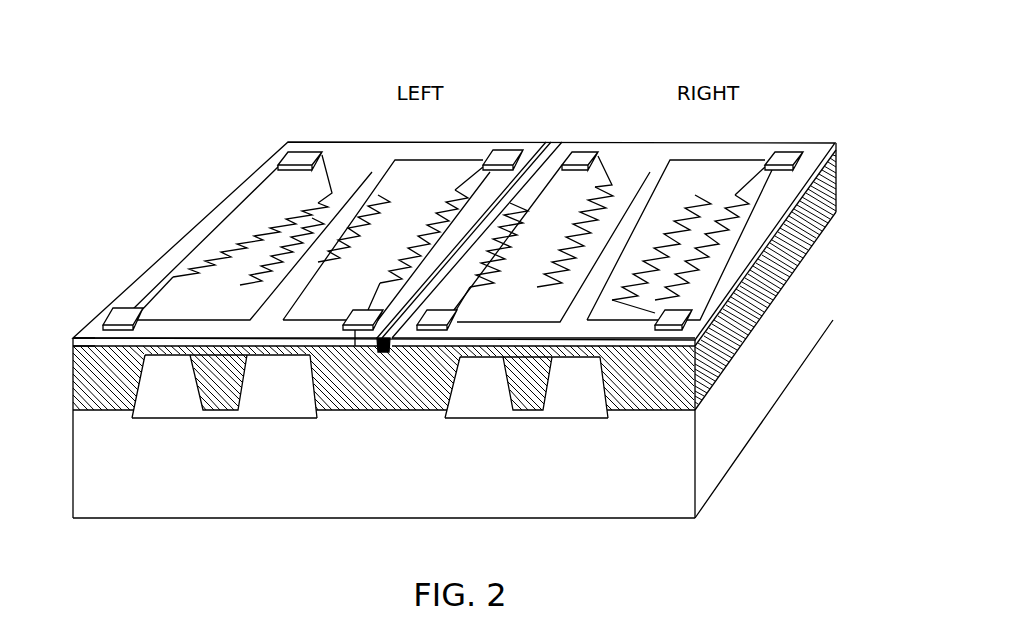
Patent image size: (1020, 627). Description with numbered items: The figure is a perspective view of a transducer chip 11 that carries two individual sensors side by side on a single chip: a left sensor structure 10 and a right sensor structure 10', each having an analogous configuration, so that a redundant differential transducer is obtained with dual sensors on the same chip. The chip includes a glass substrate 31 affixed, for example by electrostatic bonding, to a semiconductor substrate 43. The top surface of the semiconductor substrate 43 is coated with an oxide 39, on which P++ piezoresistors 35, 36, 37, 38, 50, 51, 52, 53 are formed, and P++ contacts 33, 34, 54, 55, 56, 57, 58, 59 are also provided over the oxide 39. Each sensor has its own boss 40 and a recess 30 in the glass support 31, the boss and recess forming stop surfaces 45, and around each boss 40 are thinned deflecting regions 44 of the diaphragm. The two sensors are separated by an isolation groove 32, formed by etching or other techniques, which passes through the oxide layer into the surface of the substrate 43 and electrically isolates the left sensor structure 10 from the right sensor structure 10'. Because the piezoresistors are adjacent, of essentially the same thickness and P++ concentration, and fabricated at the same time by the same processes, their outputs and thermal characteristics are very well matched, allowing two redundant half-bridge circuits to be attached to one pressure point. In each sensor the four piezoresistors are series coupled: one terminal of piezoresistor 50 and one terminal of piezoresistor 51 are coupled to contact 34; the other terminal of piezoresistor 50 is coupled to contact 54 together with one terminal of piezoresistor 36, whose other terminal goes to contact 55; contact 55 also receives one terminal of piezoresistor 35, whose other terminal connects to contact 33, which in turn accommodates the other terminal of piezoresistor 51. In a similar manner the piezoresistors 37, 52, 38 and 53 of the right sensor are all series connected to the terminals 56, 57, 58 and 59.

The left sensor structure 10 is at (310, 183).
The right sensor structure 10' is at (608, 179).
The transducer chip 11 is at (196, 88).
The recess 30 is at (283, 416).
The glass substrate 31 is at (765, 400).
The isolation groove 32 is at (552, 142).
The P++ contact 33 is at (282, 160).
The P++ contact 34 is at (503, 152).
The P++ piezoresistor 35 is at (238, 198).
The P++ piezoresistor 36 is at (362, 318).
The P++ piezoresistor 37 is at (513, 262).
The P++ piezoresistor 38 is at (690, 222).
The oxide 39 is at (75, 338).
The boss 40 is at (222, 408).
The semiconductor substrate 43 is at (837, 150).
The thinned deflecting regions 44 is at (178, 362).
The stop surfaces 45 is at (195, 418).
The P++ piezoresistor 50 is at (437, 228).
The P++ piezoresistor 51 is at (240, 255).
The P++ piezoresistor 52 is at (577, 234).
The P++ piezoresistor 53 is at (700, 255).
The P++ contact 54 is at (362, 330).
The P++ contact 55 is at (130, 308).
The P++ contact 56 is at (583, 152).
The P++ contact 57 is at (785, 152).
The P++ contact 58 is at (425, 330).
The P++ contact 59 is at (670, 330).